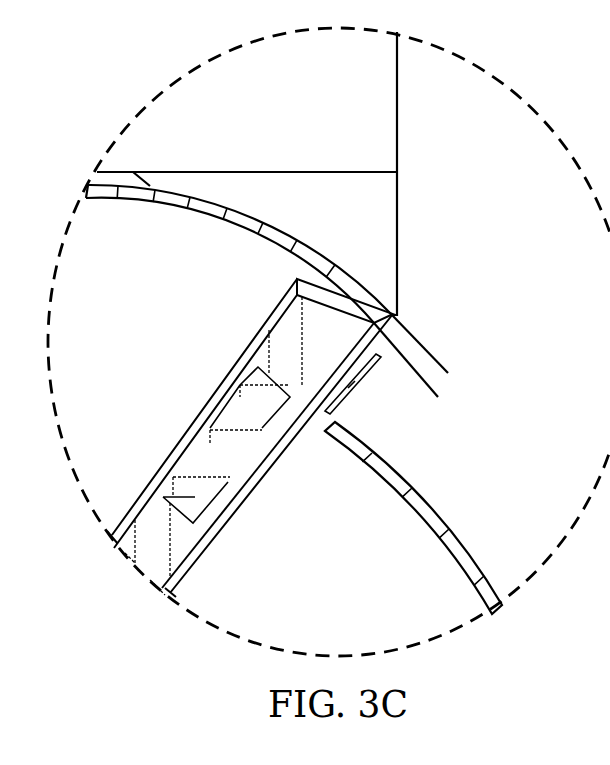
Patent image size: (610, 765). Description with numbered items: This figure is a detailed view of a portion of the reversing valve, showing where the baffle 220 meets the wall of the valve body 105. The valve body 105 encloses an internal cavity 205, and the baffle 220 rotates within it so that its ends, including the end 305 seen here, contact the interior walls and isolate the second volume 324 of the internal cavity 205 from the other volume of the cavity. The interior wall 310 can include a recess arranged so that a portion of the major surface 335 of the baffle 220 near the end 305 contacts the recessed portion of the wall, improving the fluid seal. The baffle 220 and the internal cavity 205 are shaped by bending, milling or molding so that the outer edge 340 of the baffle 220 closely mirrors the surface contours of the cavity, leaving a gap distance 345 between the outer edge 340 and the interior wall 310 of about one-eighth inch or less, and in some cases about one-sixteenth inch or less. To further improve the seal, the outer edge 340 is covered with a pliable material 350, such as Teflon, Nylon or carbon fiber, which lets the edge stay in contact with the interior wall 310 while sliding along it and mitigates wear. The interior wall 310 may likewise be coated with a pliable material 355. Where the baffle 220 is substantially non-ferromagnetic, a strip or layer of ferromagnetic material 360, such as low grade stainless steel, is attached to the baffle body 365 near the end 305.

The valve body 105 is at (517, 266).
The internal cavity 205 is at (108, 372).
The baffle 220 is at (139, 464).
The end of the baffle 305 is at (285, 337).
The interior wall 310 is at (180, 231).
The second volume 324 is at (368, 620).
The major surface of the baffle 335 is at (254, 499).
The outer edge of the baffle 340 is at (310, 281).
The gap distance 345 is at (447, 366).
The pliable material 350 is at (280, 442).
The pliable material 355 is at (457, 550).
The ferromagnetic material 360 is at (203, 457).
The baffle body 365 is at (185, 540).